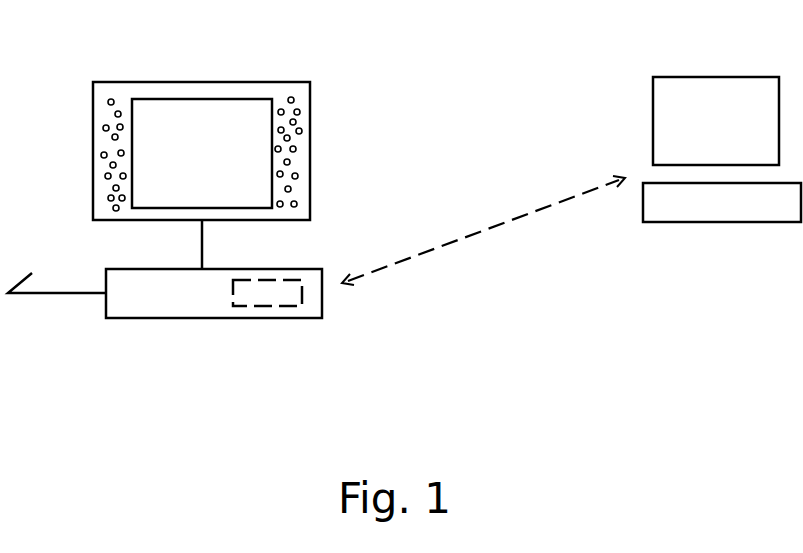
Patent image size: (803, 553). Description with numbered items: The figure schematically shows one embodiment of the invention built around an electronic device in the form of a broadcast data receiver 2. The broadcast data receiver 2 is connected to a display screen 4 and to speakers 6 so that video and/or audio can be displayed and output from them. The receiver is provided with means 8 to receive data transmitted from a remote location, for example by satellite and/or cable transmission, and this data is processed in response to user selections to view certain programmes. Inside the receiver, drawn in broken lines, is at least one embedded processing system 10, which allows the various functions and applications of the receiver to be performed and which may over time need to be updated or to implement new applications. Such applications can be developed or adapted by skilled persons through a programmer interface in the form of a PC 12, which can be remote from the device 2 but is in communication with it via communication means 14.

The broadcast data receiver 2 is at (168, 292).
The display screen 4 is at (203, 113).
The speakers 6 is at (111, 100).
The means to receive data 8 is at (58, 293).
The embedded processing system 10 is at (273, 292).
The PC 12 is at (714, 93).
The communication means 14 is at (503, 223).